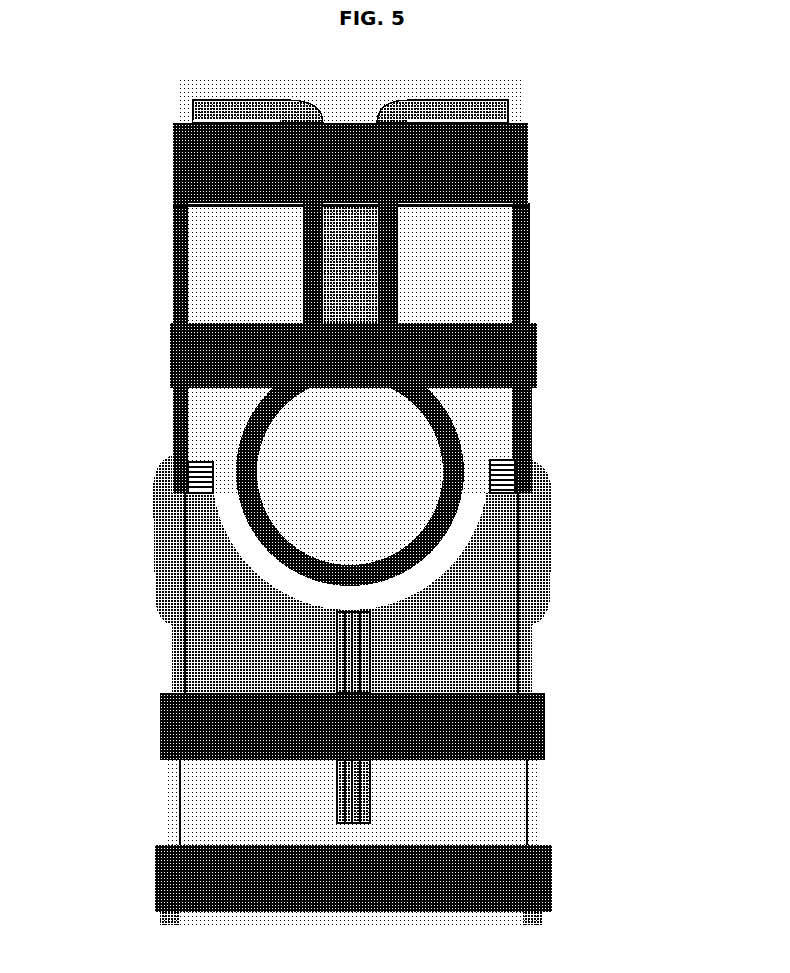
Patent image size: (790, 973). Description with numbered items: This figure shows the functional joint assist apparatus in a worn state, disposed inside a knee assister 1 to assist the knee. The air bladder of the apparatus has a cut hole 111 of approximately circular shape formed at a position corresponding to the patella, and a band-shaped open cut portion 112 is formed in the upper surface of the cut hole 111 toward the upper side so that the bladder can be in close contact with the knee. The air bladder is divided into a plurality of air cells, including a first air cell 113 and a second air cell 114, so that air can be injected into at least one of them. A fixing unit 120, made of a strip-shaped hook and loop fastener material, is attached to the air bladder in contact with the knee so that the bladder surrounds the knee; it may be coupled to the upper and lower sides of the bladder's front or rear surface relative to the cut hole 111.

The knee assister 1 is at (370, 496).
The cut hole 111 is at (446, 457).
The open cut portion 112 is at (323, 258).
The first air cell 113 is at (458, 263).
The second air cell 114 is at (457, 666).
The fixing unit 120 is at (485, 148).